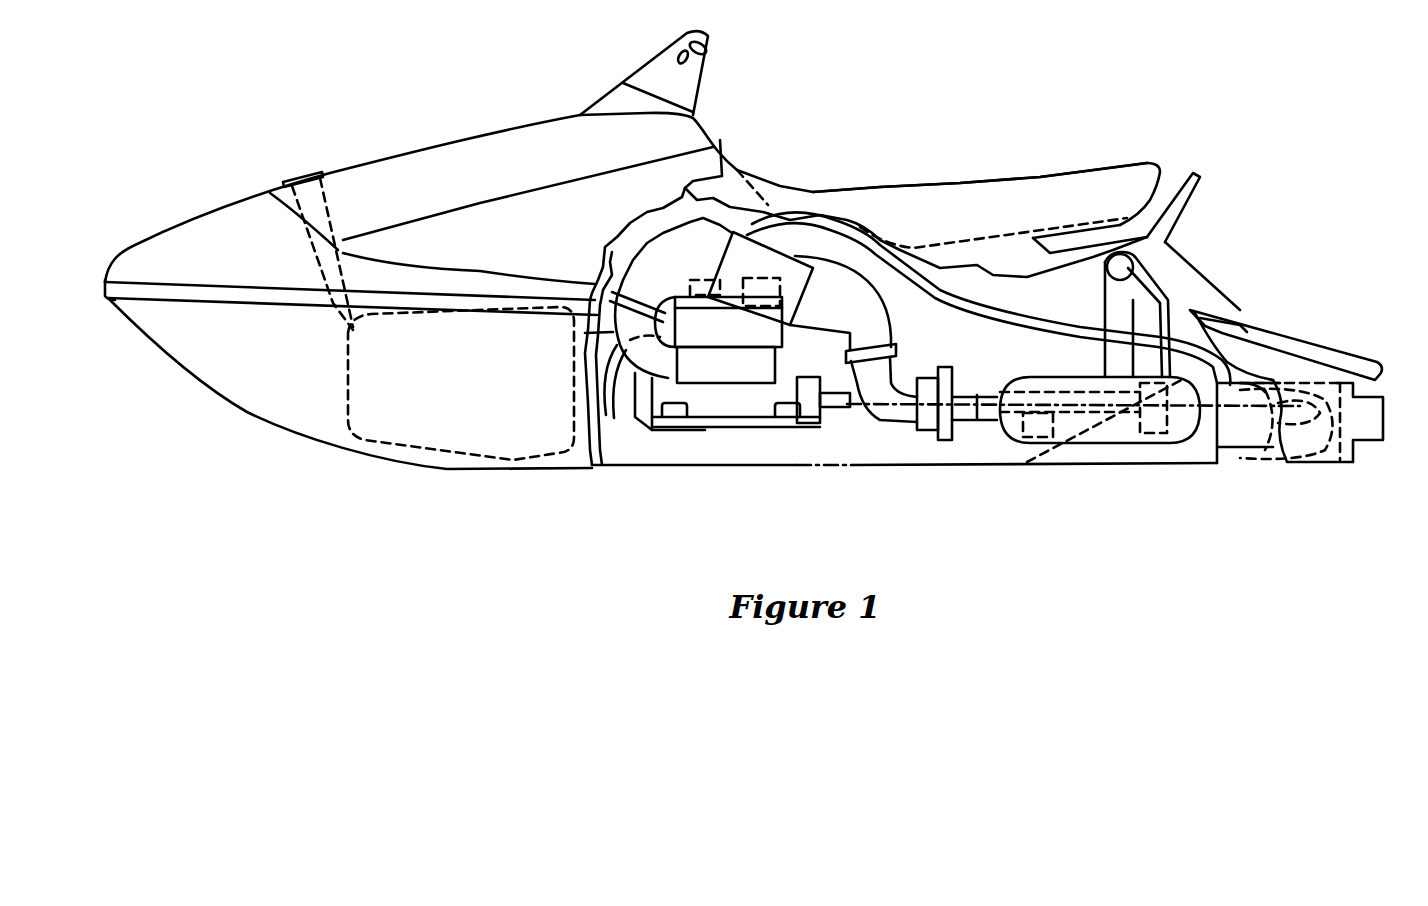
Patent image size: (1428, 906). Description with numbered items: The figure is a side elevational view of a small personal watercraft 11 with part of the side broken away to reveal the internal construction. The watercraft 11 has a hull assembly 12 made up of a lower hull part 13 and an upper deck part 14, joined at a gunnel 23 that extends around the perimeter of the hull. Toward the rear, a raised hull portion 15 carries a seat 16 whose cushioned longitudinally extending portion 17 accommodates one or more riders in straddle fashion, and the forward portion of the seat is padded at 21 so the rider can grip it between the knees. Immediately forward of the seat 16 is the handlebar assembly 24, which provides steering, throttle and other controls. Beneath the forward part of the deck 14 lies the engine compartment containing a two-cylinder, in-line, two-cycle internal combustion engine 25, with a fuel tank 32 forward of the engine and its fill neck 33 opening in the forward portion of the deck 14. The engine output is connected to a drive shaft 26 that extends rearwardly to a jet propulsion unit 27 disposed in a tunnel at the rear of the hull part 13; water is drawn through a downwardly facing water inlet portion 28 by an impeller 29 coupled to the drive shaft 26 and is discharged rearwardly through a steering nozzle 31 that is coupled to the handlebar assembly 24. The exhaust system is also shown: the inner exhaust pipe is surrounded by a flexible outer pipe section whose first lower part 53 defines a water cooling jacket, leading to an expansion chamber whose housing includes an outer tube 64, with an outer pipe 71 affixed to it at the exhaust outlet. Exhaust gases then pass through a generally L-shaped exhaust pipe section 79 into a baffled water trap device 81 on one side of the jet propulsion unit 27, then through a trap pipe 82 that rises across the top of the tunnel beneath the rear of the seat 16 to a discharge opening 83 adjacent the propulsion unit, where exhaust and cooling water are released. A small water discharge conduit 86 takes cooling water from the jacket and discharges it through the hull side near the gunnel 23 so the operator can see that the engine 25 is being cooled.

The personal watercraft 11 is at (972, 108).
The hull assembly 12 is at (155, 354).
The lower hull part 13 is at (243, 413).
The upper deck part 14 is at (480, 135).
The raised hull portion 15 is at (1163, 243).
The seat 16 is at (1068, 168).
The longitudinally extending portion 17 is at (1010, 183).
The padded forward portion of the seat 21 is at (720, 187).
The gunnel 23 is at (105, 297).
The handlebar assembly 24 is at (690, 35).
The internal combustion engine 25 is at (735, 420).
The drive shaft 26 is at (837, 403).
The jet propulsion unit 27 is at (1232, 455).
The water inlet portion 28 is at (1080, 433).
The impeller 29 is at (1265, 440).
The steering nozzle 31 is at (1365, 442).
The fuel tank 32 is at (348, 383).
The fill neck 33 is at (300, 173).
The first lower part of outer pipe section 53 is at (585, 333).
The outer tube 64 is at (790, 268).
The outer pipe 71 is at (878, 296).
The exhaust pipe section 79 is at (878, 438).
The water trap device 81 is at (1103, 447).
The trap pipe 82 is at (1152, 290).
The discharge opening 83 is at (1267, 385).
The water discharge conduit 86 is at (615, 372).